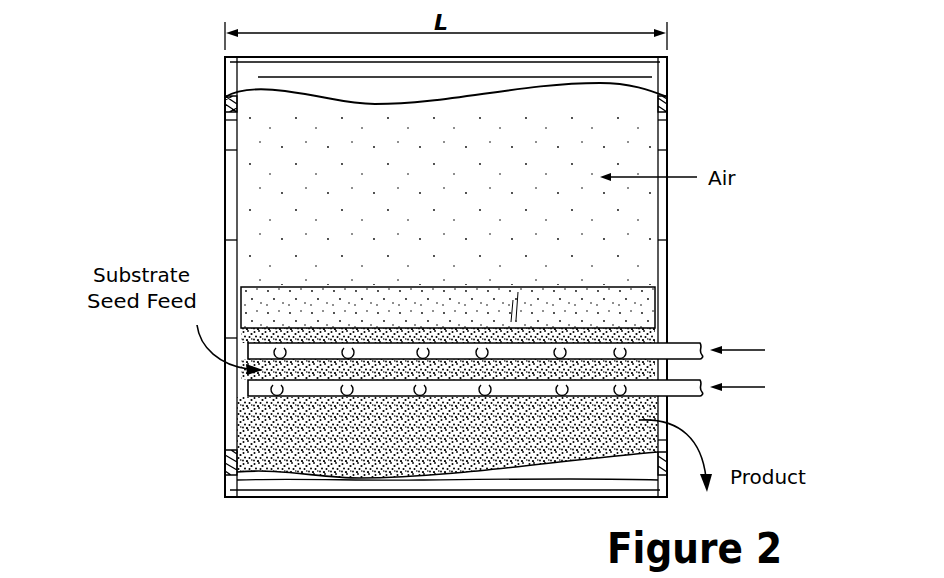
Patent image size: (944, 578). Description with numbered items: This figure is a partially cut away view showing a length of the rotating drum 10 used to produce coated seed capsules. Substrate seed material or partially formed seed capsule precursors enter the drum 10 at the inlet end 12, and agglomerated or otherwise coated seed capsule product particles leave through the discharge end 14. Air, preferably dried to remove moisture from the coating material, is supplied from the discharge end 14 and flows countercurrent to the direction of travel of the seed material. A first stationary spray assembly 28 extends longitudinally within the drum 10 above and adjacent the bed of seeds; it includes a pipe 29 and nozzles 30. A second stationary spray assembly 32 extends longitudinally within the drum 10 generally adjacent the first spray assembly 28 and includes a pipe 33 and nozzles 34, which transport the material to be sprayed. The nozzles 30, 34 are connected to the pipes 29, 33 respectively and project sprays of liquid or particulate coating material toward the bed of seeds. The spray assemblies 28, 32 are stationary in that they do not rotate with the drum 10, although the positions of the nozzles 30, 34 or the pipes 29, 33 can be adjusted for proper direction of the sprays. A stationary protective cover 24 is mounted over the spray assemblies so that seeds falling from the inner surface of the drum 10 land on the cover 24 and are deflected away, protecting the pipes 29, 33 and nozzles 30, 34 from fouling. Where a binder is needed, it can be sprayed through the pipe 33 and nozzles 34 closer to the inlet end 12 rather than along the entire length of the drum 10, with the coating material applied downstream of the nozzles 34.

The drum 10 is at (208, 90).
The inlet end 12 is at (216, 220).
The discharge end 14 is at (684, 279).
The stationary protective cover 24 is at (622, 298).
The first stationary spray assembly 28 is at (688, 343).
The pipe 29 is at (482, 325).
The nozzles 30 is at (280, 343).
The second stationary spray assembly 32 is at (697, 397).
The pipe 33 is at (440, 380).
The nozzles 34 is at (344, 378).